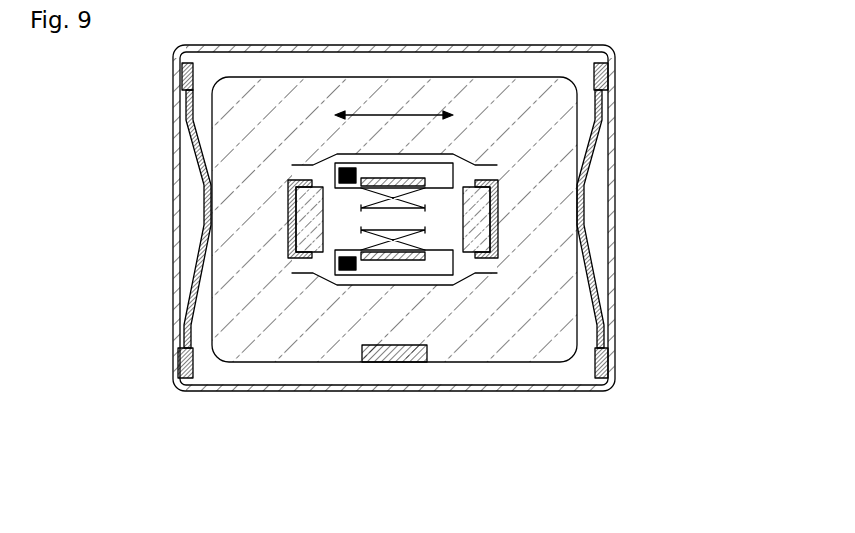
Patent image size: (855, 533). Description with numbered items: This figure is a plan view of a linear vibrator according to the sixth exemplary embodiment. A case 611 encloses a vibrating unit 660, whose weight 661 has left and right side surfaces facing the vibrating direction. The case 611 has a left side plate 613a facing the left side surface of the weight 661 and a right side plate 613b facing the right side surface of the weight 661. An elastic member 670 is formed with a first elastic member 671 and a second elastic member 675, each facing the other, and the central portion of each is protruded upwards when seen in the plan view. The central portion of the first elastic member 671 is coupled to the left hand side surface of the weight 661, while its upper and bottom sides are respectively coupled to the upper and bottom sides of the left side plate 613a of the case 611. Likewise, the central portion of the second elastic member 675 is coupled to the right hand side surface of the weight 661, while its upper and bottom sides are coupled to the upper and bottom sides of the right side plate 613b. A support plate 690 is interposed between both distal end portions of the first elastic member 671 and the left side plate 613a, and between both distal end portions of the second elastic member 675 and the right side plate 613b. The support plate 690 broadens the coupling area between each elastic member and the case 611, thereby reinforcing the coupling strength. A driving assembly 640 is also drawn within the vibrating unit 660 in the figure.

The case 611 is at (176, 390).
The left side plate 613a is at (177, 292).
The right side plate 613b is at (615, 253).
The actuator / driving unit 640 is at (433, 262).
The vibrating unit 660 is at (394, 294).
The weight 661 is at (323, 343).
The elastic member 670 is at (409, 219).
The first elastic member 671 is at (197, 160).
The second elastic member 675 is at (596, 146).
The support plate 690 is at (182, 73).